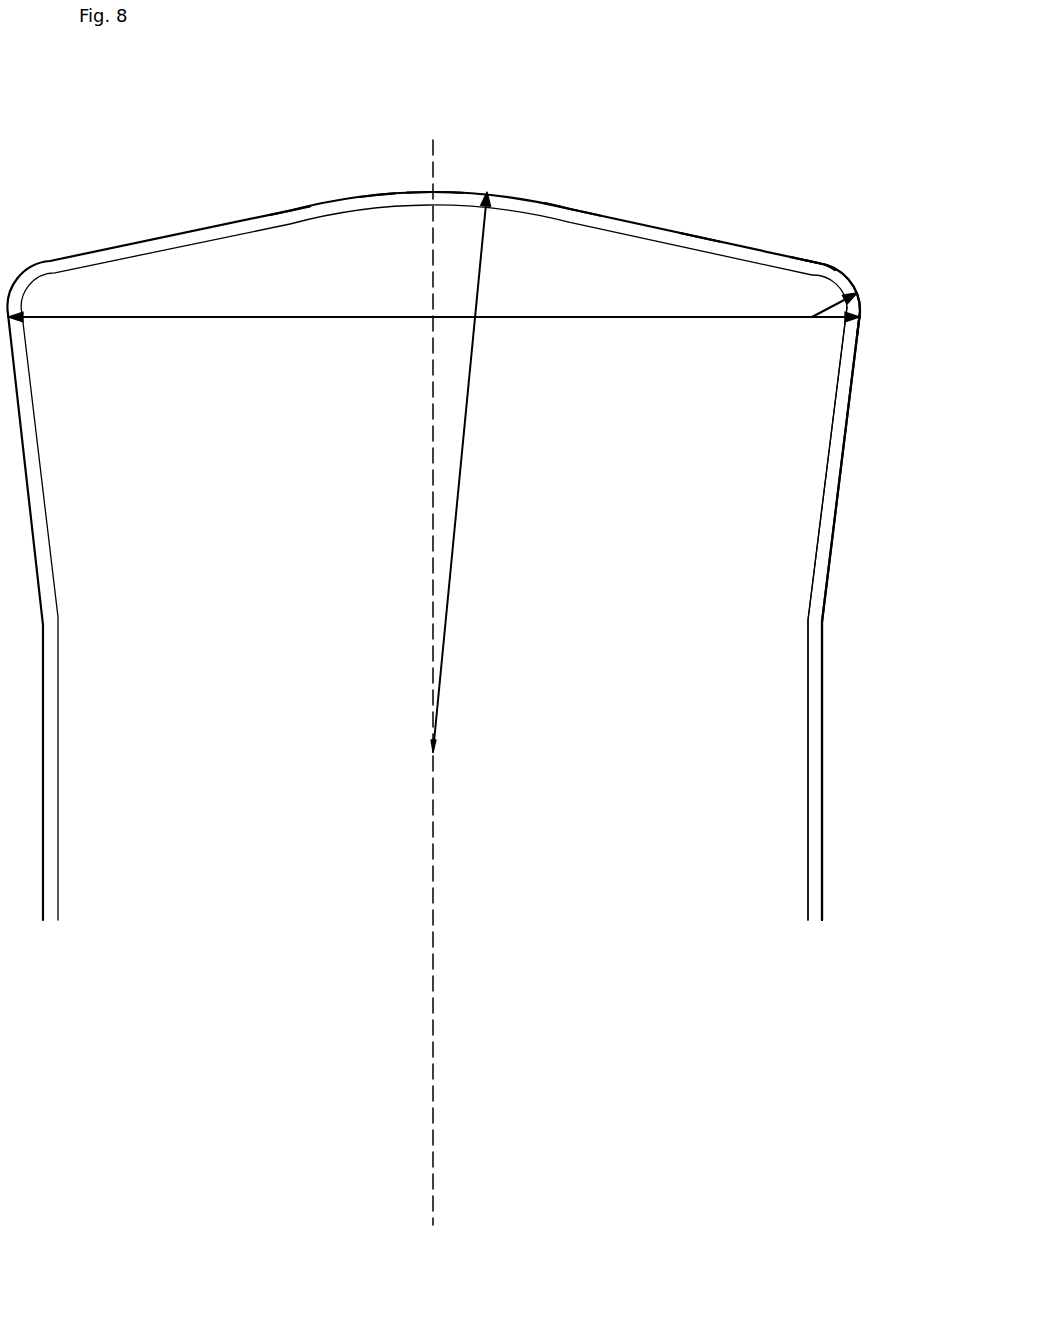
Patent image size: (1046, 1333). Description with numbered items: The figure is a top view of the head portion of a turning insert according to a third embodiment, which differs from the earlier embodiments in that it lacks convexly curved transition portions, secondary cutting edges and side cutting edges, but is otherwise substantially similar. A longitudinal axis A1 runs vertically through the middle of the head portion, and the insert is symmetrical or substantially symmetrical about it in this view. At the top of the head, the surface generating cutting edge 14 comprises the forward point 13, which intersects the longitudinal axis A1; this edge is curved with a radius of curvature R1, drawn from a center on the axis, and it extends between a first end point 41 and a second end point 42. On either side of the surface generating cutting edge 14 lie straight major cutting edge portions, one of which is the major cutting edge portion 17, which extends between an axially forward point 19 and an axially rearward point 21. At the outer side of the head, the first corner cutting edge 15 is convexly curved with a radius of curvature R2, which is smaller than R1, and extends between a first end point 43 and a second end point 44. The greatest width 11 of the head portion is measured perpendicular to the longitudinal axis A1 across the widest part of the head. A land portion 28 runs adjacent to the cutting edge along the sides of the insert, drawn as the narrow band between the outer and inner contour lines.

The greatest width of the head portion 11 is at (434, 301).
The forward point 13 is at (436, 190).
The surface generating cutting edge 14 is at (377, 192).
The first corner cutting edge 15 is at (843, 278).
The major cutting edge portion 17 is at (699, 236).
The axially forward point 19 is at (566, 206).
The axially rearward point 21 is at (819, 262).
The land portion 28 is at (822, 578).
The first end point 41 is at (565, 206).
The second end point 42 is at (293, 207).
The first end point 43 is at (816, 262).
The second end point 44 is at (858, 334).
The radius of curvature of the surface generating cutting edge R1 is at (462, 472).
The radius of curvature of the first corner cutting edge R2 is at (826, 301).
The longitudinal axis A1 is at (433, 700).